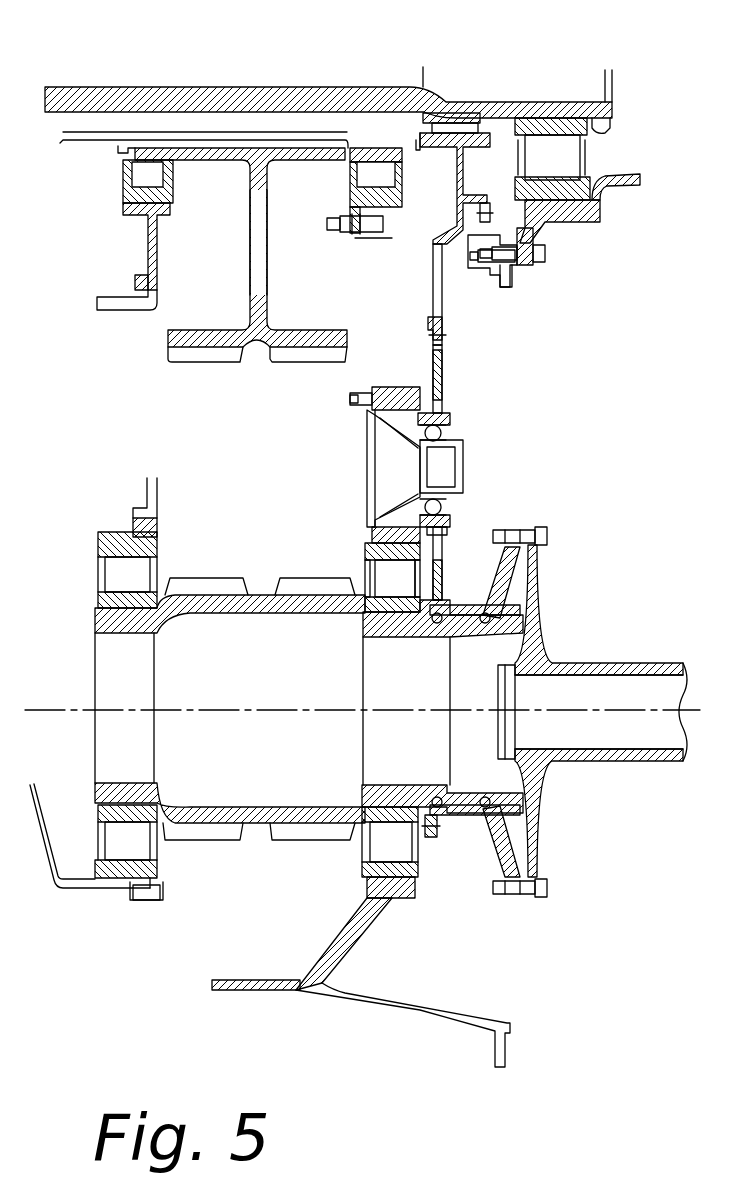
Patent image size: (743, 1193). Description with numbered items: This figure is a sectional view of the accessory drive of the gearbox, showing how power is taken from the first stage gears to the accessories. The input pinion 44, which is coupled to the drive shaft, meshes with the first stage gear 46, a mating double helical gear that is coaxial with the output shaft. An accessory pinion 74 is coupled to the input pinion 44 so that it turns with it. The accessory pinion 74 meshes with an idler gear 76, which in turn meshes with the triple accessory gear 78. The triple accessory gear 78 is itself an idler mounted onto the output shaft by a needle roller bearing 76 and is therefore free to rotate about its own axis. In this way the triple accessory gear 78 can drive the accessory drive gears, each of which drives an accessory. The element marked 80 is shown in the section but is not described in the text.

The input pinion 44 is at (255, 602).
The first stage gear 46 is at (203, 162).
The accessory pinion 74 is at (430, 838).
The idler gear 76 is at (441, 384).
The triple accessory gear 78 is at (441, 324).
The mount 80 is at (458, 126).